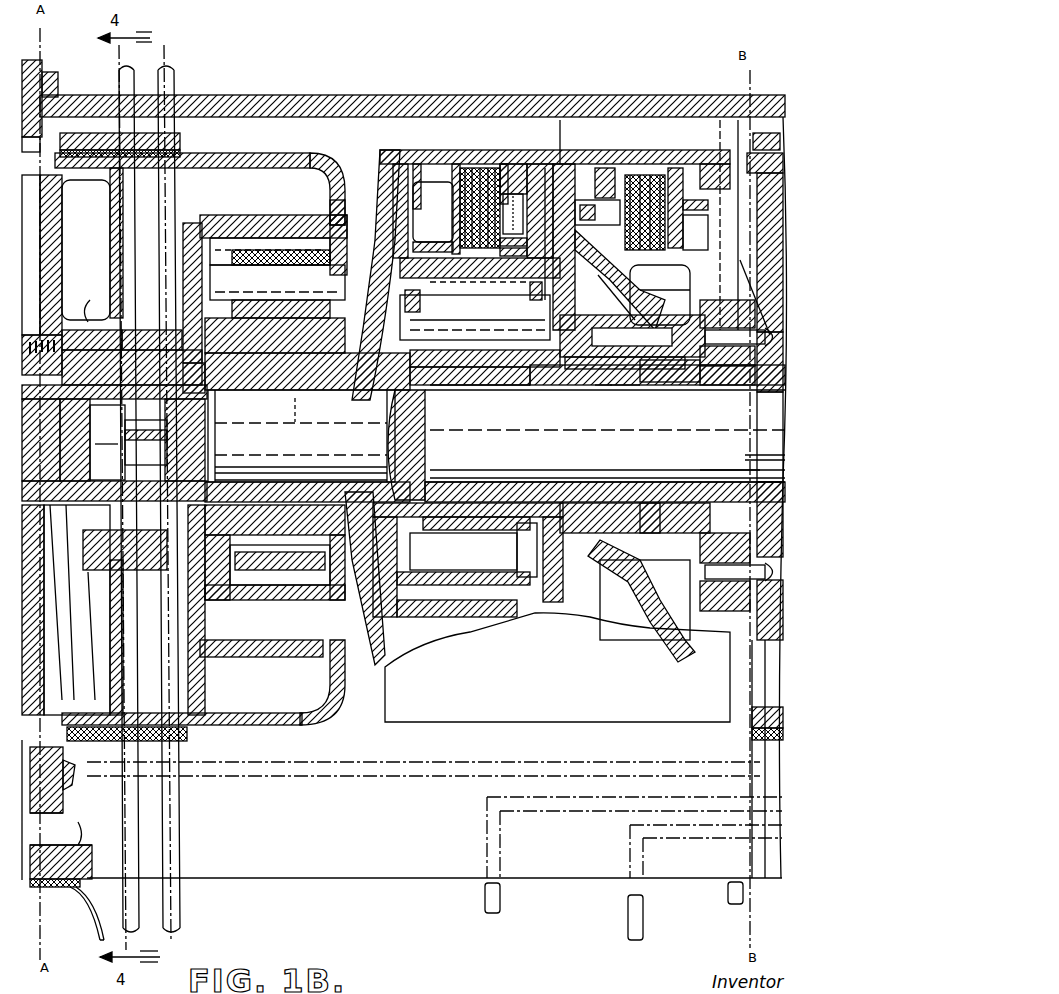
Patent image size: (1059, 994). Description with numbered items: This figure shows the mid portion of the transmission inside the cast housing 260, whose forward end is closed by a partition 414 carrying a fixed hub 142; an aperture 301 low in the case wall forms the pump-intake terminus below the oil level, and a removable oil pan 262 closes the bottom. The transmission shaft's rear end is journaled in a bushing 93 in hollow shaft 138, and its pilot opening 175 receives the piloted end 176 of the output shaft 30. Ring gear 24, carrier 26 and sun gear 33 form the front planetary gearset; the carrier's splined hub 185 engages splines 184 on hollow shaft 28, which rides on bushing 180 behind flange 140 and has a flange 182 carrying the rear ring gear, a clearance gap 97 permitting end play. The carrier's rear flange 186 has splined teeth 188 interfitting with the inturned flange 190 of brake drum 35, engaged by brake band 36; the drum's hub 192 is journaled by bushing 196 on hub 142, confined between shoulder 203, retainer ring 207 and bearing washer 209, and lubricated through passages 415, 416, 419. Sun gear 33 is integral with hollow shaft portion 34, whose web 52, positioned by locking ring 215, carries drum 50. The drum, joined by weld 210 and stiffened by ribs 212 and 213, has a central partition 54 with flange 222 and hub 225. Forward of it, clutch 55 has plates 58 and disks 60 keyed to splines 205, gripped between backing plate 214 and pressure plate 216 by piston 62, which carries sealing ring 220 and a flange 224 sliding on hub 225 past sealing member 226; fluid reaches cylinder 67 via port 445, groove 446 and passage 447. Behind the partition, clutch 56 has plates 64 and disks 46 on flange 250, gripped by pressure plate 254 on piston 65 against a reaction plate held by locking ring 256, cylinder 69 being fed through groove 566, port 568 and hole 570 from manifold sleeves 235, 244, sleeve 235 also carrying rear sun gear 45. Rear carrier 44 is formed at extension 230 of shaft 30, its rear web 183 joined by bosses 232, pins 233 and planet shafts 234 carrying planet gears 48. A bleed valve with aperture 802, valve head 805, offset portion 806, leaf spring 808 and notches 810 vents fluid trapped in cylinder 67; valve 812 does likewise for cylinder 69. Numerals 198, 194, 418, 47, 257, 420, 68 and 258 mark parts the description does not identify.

The cast housing 260 is at (372, 94).
The brake band 36 is at (180, 142).
The cover plate 198 is at (248, 152).
The brake drum 35 is at (305, 152).
The inturned rear flange portion 190 is at (330, 193).
The partition 414 is at (55, 222).
The hub 192 is at (123, 232).
The flange 140 is at (186, 264).
The carrier 26 is at (210, 313).
The shoulder surface 203 is at (90, 300).
The web 194 is at (92, 334).
The bushing 196 is at (152, 334).
The fixed hub 142 is at (70, 352).
The passage 415 is at (85, 368).
The passage 416 is at (105, 393).
The pilot bearing opening 175 is at (107, 442).
The hollow shaft 138 is at (108, 450).
The bearing bushing 93 is at (146, 442).
The piloted front end portion 176 is at (200, 440).
The passage 419 is at (125, 522).
The retainer ring 207 is at (125, 622).
The bearing washer 209 is at (205, 545).
The sun gear 33 is at (270, 560).
The hollow shaft portion 34 is at (305, 590).
The aperture 301 is at (62, 822).
The oil pan 262 is at (98, 932).
The rear side flange 186 is at (340, 230).
The splined teeth 188 is at (335, 212).
The internal toothed ring gear 24 is at (275, 248).
The web flange 52 is at (250, 250).
The internally splined hub portion 185 is at (307, 354).
The bushing 180 is at (250, 395).
The hollow shaft 28 is at (324, 395).
The integral extension 230 is at (385, 398).
The hub 418 is at (388, 438).
The clearance gap 97 is at (280, 470).
The splines 184 is at (345, 470).
The carrier 44 is at (373, 407).
The locking ring 215 is at (410, 150).
The hollow drum 50 is at (412, 165).
The internal longitudinal ribs 212 is at (430, 168).
The backing plate 214 is at (433, 212).
The offset annular outer portion 806 is at (433, 235).
The clutch plates 58 is at (456, 164).
The friction disks 60 is at (482, 168).
The disk clutch 55 is at (503, 164).
The pressure plate 216 is at (520, 164).
The valve head 805 is at (520, 211).
The axial aperture 802 is at (515, 241).
The longitudinal splines 205 is at (518, 254).
The sealing ring 220 is at (545, 166).
The flange portion 222 is at (548, 175).
The central partitioning web 54 is at (568, 180).
The peripheral weld 210 is at (585, 150).
The valve 812 is at (608, 166).
The notches 810 is at (600, 212).
The pressure plate 254 is at (620, 280).
The actuating cylinder 67 is at (614, 292).
The clutch plates 64 is at (645, 173).
The disk clutch assembly 56 is at (675, 166).
The rib portions 213 is at (708, 162).
The hub portion 225 is at (722, 160).
The clutch plates 46 is at (695, 206).
The supporting flange 250 is at (698, 230).
The piston 65 is at (660, 295).
The cylinder 69 is at (665, 285).
The planet gears 48 is at (480, 268).
The leaf spring 808 is at (480, 271).
The bearing 47 is at (530, 280).
The integral flange 182 is at (380, 310).
The planet shafts 234 is at (477, 322).
The piston 62 is at (560, 310).
The cylindrical flange 224 is at (632, 329).
The passage 447 is at (620, 343).
The bolt 257 is at (735, 370).
The rear web 183 is at (515, 370).
The flexible sealing member 226 is at (565, 385).
The shoulder 420 is at (430, 415).
The sun gear 45 is at (505, 386).
The manifold port 445 is at (618, 386).
The groove 446 is at (600, 387).
The sleeve portion 235 is at (700, 386).
The output shaft 30 is at (563, 450).
The integral bosses 232 is at (455, 465).
The inner manifold sleeve 244 is at (560, 465).
The port 568 is at (655, 503).
The longitudinal groove 566 is at (758, 462).
The headed pins 233 is at (487, 558).
The radial hole 570 is at (645, 563).
The block 68 is at (765, 140).
The locking ring 256 is at (715, 190).
The housing wall 258 is at (775, 226).